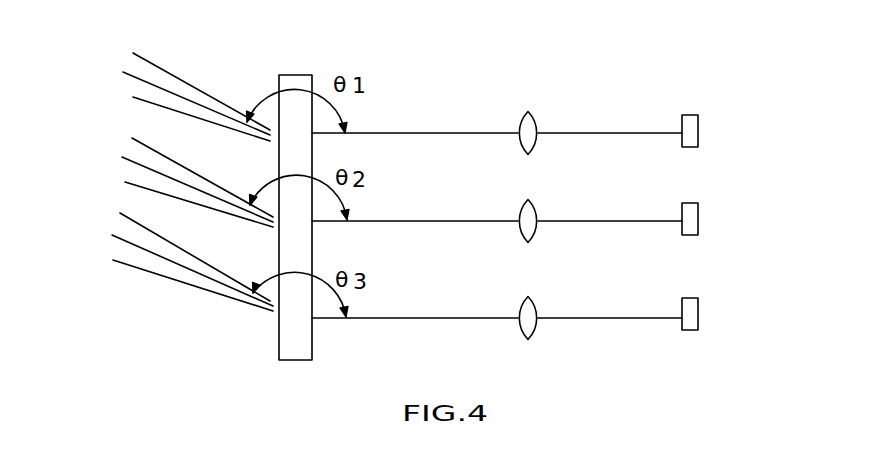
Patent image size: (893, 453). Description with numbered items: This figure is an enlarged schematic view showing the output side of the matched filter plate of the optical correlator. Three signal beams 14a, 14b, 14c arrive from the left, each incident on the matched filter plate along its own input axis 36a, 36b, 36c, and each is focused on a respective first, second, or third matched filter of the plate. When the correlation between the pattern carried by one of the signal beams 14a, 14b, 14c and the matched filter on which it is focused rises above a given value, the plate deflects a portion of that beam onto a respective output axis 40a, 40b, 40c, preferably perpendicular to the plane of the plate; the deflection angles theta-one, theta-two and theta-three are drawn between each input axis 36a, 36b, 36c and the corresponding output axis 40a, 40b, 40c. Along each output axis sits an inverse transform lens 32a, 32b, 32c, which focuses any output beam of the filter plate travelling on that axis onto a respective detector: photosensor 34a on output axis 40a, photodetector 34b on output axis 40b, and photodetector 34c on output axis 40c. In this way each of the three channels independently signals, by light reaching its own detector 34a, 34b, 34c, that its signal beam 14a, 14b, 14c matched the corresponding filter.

The signal beam 14a is at (192, 86).
The signal beam 14b is at (207, 180).
The signal beam 14c is at (183, 283).
The input axis 36a is at (168, 82).
The input axis 36b is at (167, 176).
The input axis 36c is at (163, 261).
The output axis 40a is at (432, 132).
The output axis 40b is at (433, 220).
The output axis 40c is at (438, 317).
The inverse transform lens 32a is at (535, 112).
The inverse transform lens 32b is at (536, 203).
The inverse transform lens 32c is at (536, 299).
The photosensor 34a is at (694, 114).
The photodetector 34b is at (693, 203).
The photodetector 34c is at (694, 298).